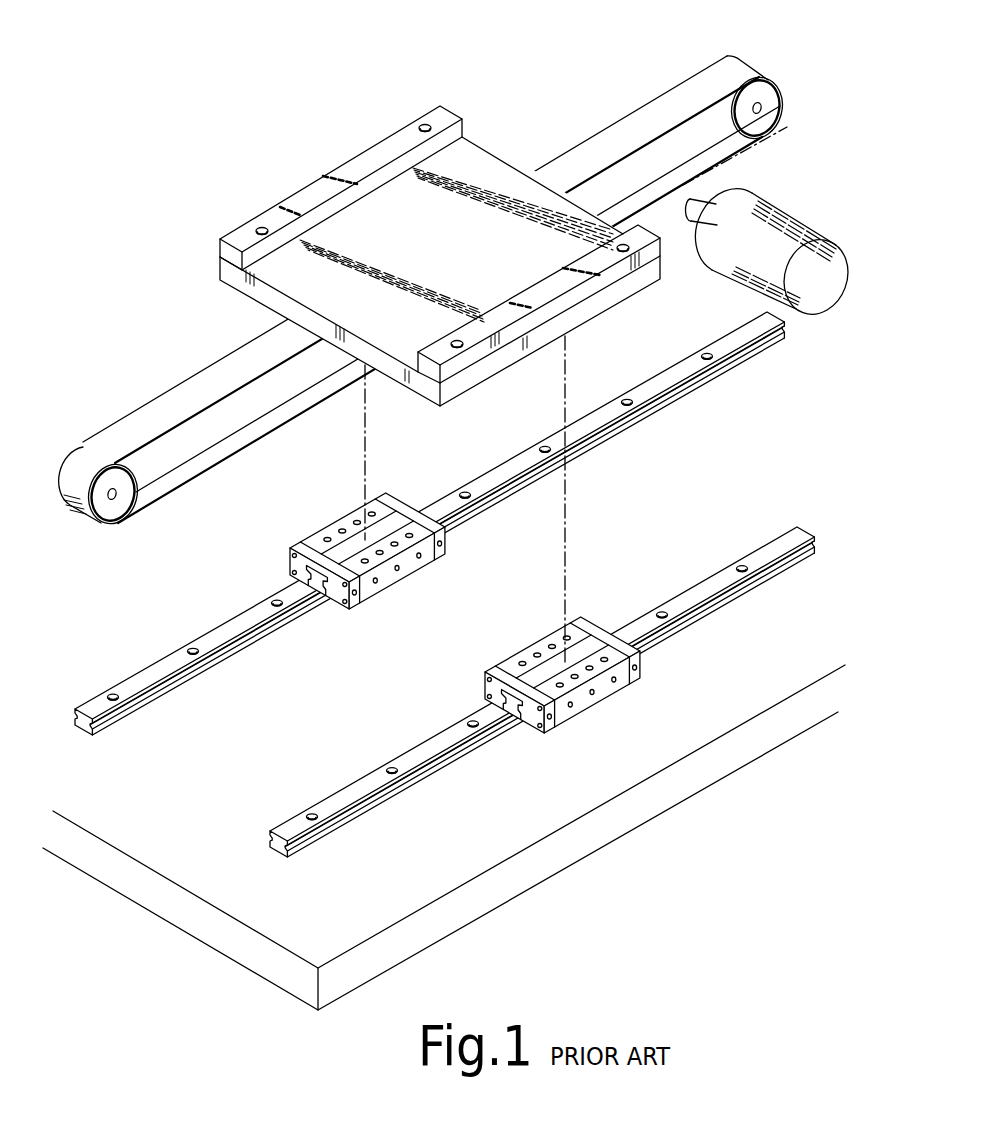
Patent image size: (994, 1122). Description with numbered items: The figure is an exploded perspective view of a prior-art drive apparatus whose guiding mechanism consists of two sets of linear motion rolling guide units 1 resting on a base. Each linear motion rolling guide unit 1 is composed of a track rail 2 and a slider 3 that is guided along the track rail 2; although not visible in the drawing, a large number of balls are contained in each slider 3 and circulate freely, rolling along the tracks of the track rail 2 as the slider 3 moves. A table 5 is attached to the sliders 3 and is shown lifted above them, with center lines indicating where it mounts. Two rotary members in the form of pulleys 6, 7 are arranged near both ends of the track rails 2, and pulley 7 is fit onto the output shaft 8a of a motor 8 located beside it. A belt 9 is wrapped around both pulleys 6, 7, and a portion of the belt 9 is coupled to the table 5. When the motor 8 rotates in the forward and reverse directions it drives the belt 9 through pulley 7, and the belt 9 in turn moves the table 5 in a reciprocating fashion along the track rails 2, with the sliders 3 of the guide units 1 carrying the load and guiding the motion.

The linear motion rolling guide unit 1 is at (147, 623).
The track rail 2 is at (97, 709).
The slider 3 is at (418, 568).
The table 5 is at (352, 233).
The pulley 6 is at (113, 480).
The pulley 7 is at (763, 95).
The motor 8 is at (752, 264).
The output shaft 8a is at (705, 203).
The belt 9 is at (648, 126).